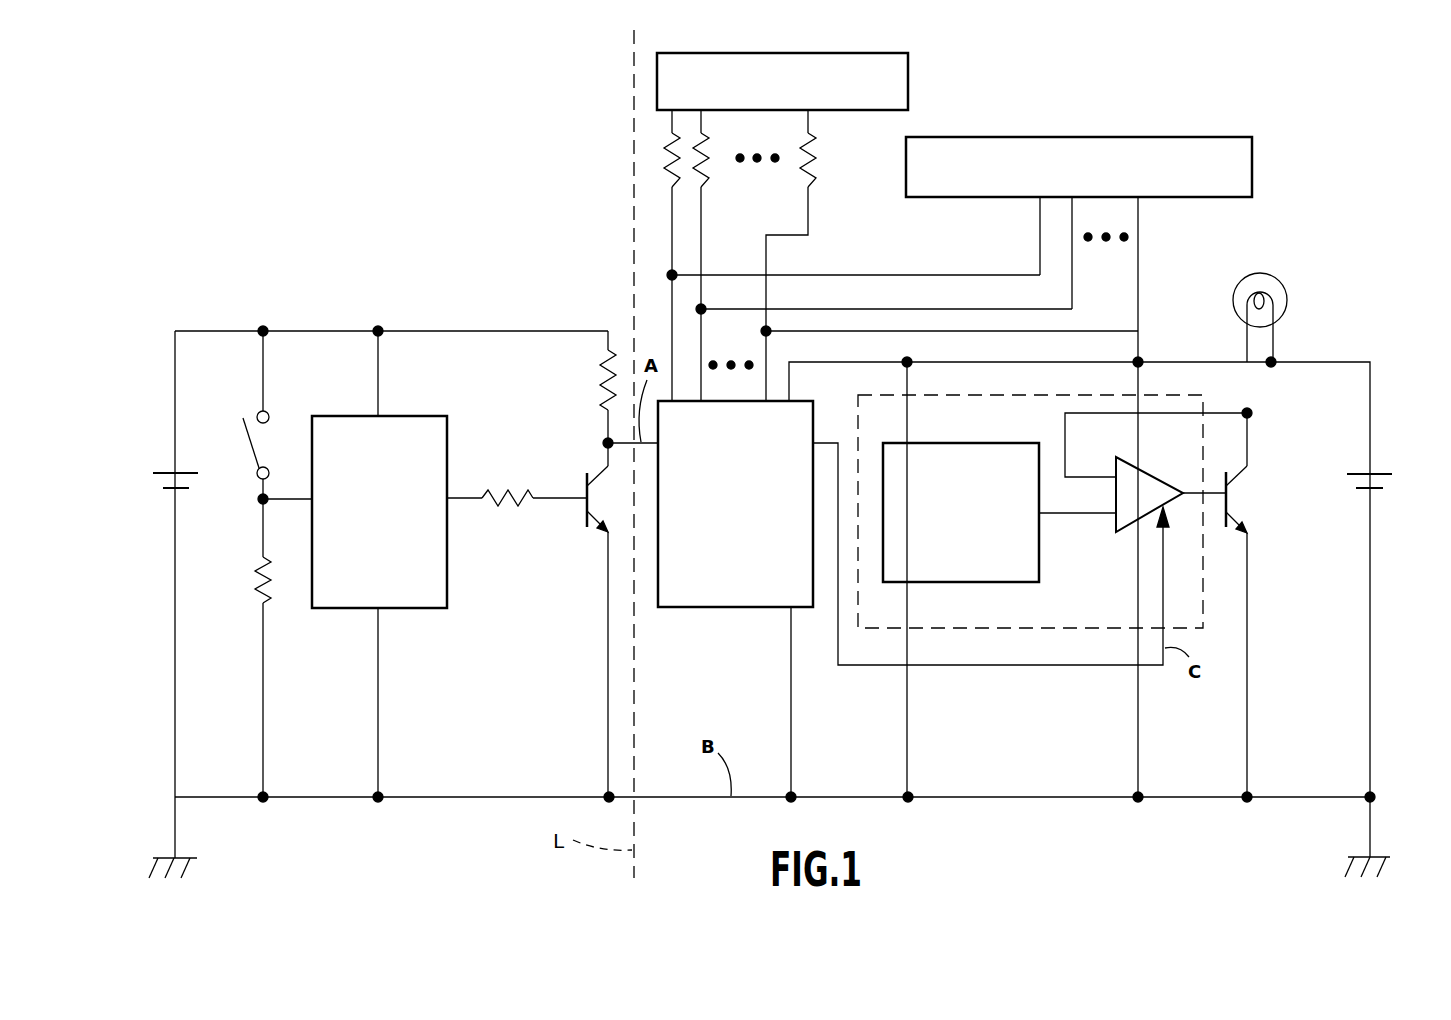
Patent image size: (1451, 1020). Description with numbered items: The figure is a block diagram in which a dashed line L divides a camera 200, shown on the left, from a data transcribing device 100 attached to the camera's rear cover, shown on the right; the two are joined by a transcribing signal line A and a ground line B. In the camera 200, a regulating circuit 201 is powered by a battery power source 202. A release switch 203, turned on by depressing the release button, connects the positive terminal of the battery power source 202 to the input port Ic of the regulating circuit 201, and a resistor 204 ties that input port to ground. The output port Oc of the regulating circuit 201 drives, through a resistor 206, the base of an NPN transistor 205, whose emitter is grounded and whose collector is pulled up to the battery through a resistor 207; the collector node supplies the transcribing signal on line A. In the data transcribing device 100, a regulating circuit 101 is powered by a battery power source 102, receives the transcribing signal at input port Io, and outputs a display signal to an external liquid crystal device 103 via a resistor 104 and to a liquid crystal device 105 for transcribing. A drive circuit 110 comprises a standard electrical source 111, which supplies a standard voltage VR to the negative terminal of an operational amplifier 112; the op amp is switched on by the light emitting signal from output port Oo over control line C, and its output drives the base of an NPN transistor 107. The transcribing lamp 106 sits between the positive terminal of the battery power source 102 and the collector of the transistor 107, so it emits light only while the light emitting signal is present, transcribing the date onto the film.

The data transcribing device 100 is at (1175, 822).
The regulating circuit 101 is at (752, 609).
The battery power source 102 is at (1379, 470).
The liquid crystal device 103 is at (910, 92).
The resistor 104 is at (812, 172).
The liquid crystal device for transcribing 105 is at (1157, 138).
The transcribing lamp 106 is at (1268, 273).
The NPN transistor 107 is at (1238, 478).
The drive circuit 110 is at (890, 632).
The standard electrical source 111 is at (986, 583).
The operational amplifier 112 is at (1158, 477).
The camera 200 is at (474, 822).
The regulating circuit 201 is at (408, 610).
The battery power source 202 is at (166, 470).
The release switch 203 is at (242, 418).
The resistor 204 is at (250, 583).
The NPN transistor 205 is at (583, 517).
The resistor 206 is at (504, 482).
The resistor 207 is at (600, 388).